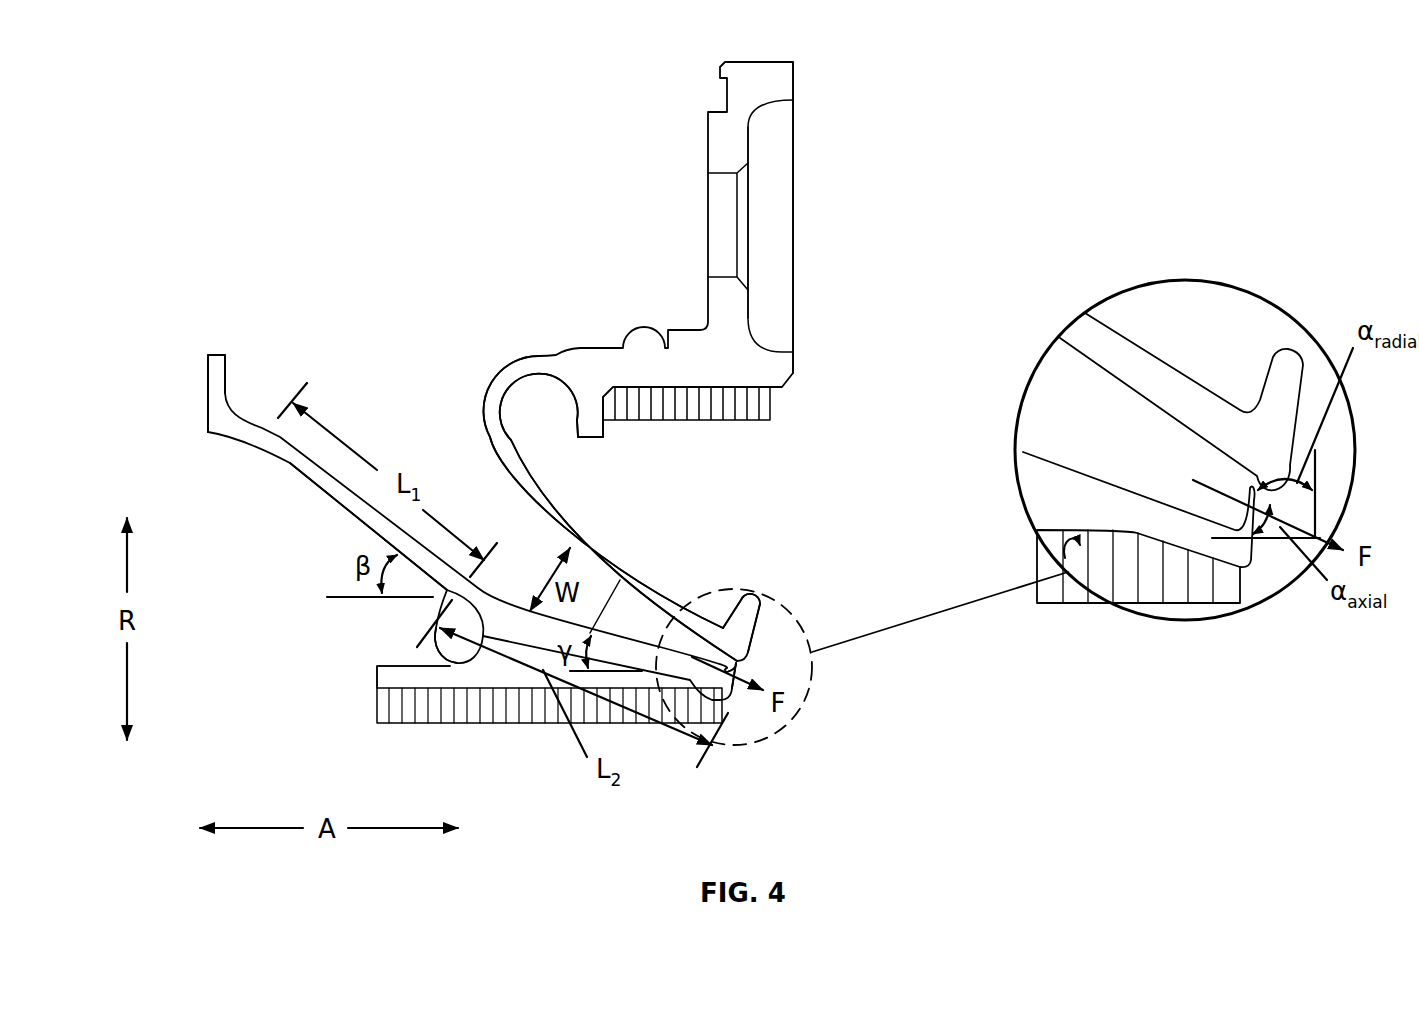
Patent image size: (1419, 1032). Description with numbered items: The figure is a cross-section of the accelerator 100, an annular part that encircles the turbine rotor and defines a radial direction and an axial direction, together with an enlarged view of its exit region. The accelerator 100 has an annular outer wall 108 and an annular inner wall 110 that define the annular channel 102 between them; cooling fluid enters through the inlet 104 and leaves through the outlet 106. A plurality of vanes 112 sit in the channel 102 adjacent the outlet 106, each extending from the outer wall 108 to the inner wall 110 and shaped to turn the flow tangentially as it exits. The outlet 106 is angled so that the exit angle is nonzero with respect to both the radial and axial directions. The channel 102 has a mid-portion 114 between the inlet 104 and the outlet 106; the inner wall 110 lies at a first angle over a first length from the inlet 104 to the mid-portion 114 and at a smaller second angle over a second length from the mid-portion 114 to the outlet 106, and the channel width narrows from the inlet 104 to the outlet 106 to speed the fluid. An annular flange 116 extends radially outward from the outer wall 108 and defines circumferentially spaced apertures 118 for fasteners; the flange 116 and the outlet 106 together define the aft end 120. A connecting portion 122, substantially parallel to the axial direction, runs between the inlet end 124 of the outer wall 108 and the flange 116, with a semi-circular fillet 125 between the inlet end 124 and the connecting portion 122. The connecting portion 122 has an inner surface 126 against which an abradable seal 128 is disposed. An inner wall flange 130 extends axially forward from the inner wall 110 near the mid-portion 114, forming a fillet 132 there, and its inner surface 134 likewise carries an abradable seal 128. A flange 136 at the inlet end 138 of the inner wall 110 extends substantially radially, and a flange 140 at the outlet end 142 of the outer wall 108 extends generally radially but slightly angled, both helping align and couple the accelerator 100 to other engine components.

The accelerator 100 is at (307, 142).
The annular channel 102 is at (465, 445).
The inlet 104 is at (378, 402).
The outlet 106 is at (748, 671).
The annular outer wall 108 is at (610, 560).
The annular inner wall 110 is at (320, 477).
The vanes 112 is at (647, 613).
The mid-portion 114 is at (431, 606).
The annular flange 116 is at (728, 183).
The apertures 118 is at (777, 257).
The aft end 120 is at (848, 122).
The connecting portion 122 is at (710, 388).
The inlet end 124 is at (495, 358).
The semi-circular fillet 125 is at (551, 436).
The inner surface 126 is at (657, 420).
The abradable seal 128 is at (703, 427).
The inner wall flange 130 is at (400, 672).
The fillet 132 is at (449, 645).
The inner surface 134 is at (1068, 572).
The flange 136 is at (217, 392).
The inlet end 138 is at (207, 331).
The flange 140 is at (755, 612).
The outlet end 142 is at (762, 581).